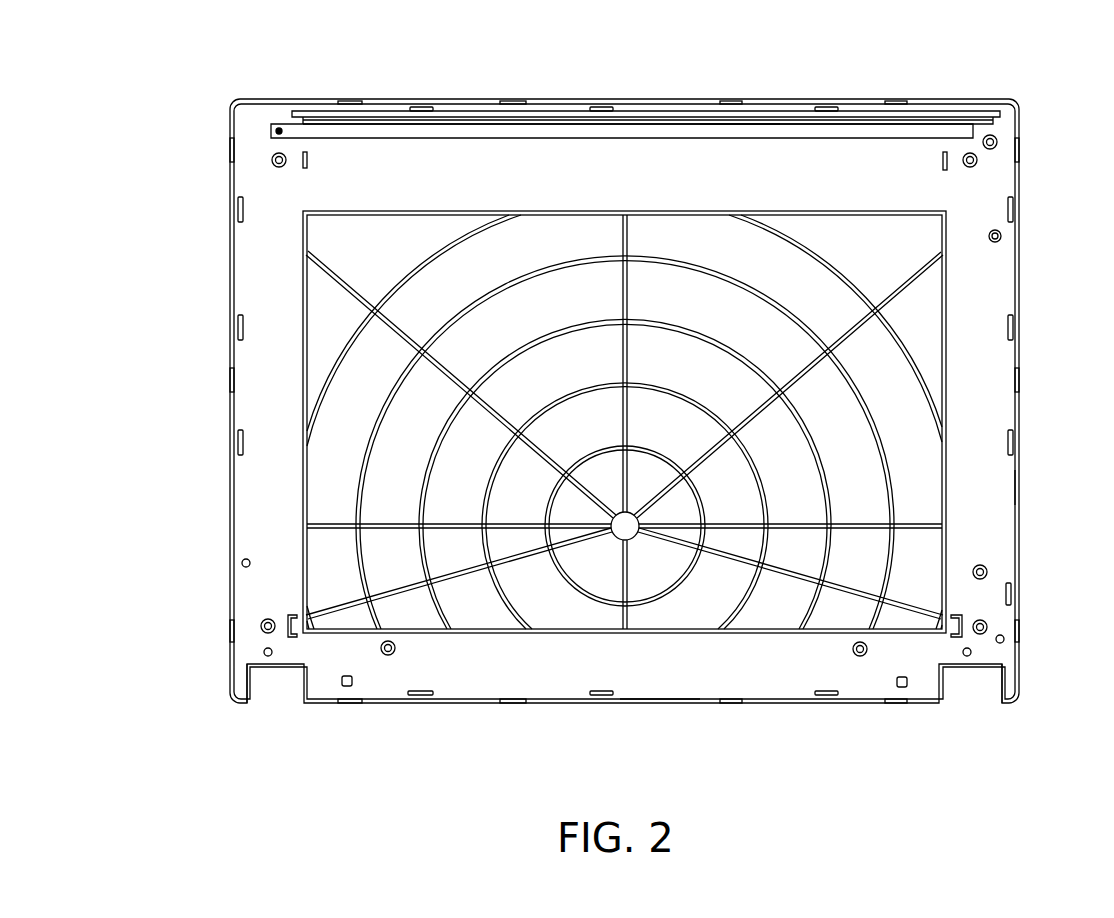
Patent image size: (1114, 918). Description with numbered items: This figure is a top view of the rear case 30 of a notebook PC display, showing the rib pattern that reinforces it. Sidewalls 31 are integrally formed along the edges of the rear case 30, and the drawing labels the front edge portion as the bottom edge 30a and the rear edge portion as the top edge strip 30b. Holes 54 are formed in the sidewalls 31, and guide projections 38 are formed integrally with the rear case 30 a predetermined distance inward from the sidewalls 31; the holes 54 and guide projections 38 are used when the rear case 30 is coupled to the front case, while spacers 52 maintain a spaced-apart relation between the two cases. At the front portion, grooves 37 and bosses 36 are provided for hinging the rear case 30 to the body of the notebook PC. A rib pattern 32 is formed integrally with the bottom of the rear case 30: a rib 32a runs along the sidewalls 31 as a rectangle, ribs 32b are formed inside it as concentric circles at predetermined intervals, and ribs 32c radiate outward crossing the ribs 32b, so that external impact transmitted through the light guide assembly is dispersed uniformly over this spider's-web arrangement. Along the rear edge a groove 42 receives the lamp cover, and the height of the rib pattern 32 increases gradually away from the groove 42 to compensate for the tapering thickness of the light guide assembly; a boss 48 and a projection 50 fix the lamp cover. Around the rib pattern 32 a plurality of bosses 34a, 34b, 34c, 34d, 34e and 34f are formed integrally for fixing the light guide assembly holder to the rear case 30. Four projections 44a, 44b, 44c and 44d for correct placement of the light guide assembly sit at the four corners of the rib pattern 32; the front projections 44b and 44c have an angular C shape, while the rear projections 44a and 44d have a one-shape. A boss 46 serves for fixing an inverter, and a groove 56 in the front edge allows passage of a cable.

The rear case 30 is at (1005, 283).
The bottom edge of frame 30a is at (655, 703).
The top edge strip of frame 30b is at (665, 101).
The sidewalls 31 is at (1020, 487).
The rib pattern 32 is at (928, 345).
The rib 32a is at (833, 212).
The ribs 32b is at (820, 256).
The ribs 32c is at (910, 284).
The boss 34a is at (978, 163).
The boss 34b is at (987, 625).
The boss 34c is at (859, 657).
The boss 34d is at (396, 648).
The boss 34e is at (266, 619).
The boss 34f is at (279, 168).
The bosses 36 is at (968, 658).
The grooves 37 is at (990, 700).
The guide projections 38 is at (828, 107).
The groove 42 is at (730, 132).
The projection 44a is at (943, 160).
The projection 44b is at (957, 640).
The projection 44c is at (293, 640).
The projection 44d is at (307, 160).
The boss 46 is at (982, 565).
The boss 48 is at (996, 138).
The projection 50 is at (279, 131).
The spacers 52 is at (923, 735).
The holes 54 is at (900, 101).
The groove 56 is at (512, 703).